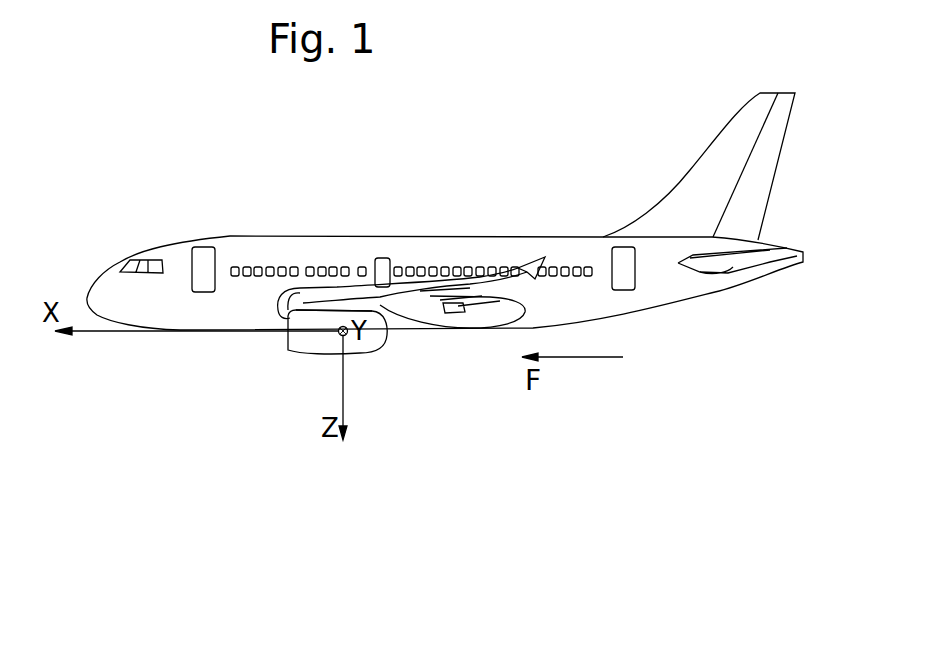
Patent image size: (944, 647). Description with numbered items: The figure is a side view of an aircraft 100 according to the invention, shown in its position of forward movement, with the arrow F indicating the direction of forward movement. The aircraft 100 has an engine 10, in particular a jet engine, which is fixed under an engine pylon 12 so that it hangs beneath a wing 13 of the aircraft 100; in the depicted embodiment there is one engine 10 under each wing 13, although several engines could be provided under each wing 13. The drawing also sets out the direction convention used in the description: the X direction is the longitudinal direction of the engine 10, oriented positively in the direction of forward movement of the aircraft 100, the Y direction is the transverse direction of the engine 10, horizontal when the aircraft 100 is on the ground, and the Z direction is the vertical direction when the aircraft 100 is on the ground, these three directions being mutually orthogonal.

The aircraft 100 is at (252, 207).
The engine 10 is at (300, 378).
The engine pylon 12 is at (372, 308).
The wing 13 is at (443, 285).